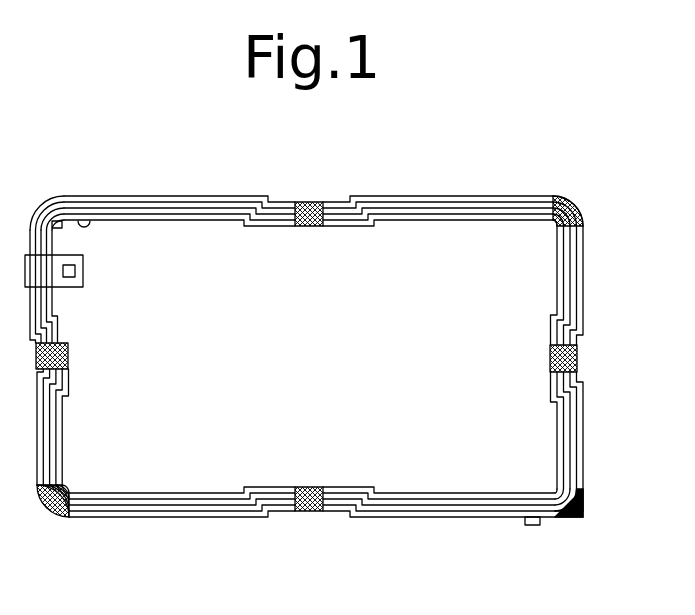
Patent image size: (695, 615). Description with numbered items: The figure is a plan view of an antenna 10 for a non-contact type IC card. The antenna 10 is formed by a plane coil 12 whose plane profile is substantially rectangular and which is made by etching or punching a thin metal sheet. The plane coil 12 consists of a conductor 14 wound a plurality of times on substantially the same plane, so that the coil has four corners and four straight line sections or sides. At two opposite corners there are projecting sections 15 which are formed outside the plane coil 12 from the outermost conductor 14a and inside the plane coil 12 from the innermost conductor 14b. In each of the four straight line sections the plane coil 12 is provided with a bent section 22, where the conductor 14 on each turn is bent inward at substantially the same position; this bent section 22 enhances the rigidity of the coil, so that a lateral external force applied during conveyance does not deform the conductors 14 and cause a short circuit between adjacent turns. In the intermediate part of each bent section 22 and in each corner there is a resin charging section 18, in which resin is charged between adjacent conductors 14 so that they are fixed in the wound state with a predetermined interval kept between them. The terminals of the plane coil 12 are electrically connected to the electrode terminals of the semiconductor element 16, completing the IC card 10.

The antenna for a non-contact type IC card 10 is at (282, 168).
The plane coil 12 is at (462, 238).
The conductor 14 is at (134, 492).
The outermost conductor 14a is at (584, 425).
The innermost conductor 14b is at (208, 224).
The projecting section 15 is at (90, 226).
The semiconductor element 16 is at (75, 272).
The resin charging section 18 is at (579, 357).
The bent section 22 is at (315, 234).